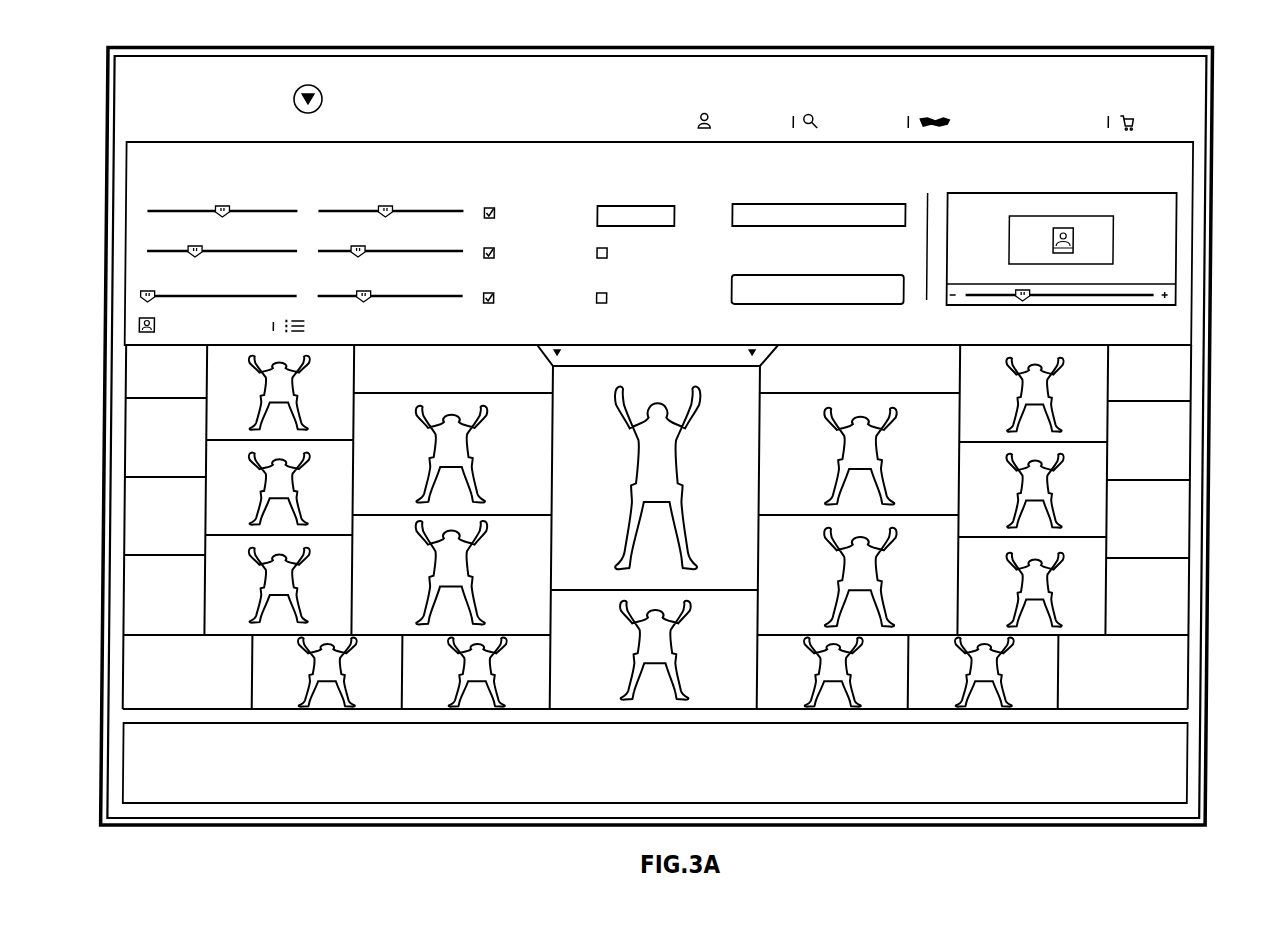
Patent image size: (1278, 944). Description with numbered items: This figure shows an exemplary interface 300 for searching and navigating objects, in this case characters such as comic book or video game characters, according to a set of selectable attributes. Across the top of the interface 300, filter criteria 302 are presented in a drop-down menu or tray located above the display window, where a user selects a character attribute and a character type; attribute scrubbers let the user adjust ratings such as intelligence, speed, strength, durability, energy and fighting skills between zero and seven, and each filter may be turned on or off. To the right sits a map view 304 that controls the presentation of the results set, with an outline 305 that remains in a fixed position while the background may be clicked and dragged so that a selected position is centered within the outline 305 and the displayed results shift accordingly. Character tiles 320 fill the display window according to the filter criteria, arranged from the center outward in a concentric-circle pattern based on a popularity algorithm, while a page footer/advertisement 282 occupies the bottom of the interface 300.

The interface 300 is at (126, 31).
The filter criteria 302 is at (90, 143).
The map view 304 is at (1164, 258).
The outline 305 is at (1061, 215).
The character tiles 320 is at (218, 406).
The page footer/advertisement 282 is at (1177, 768).